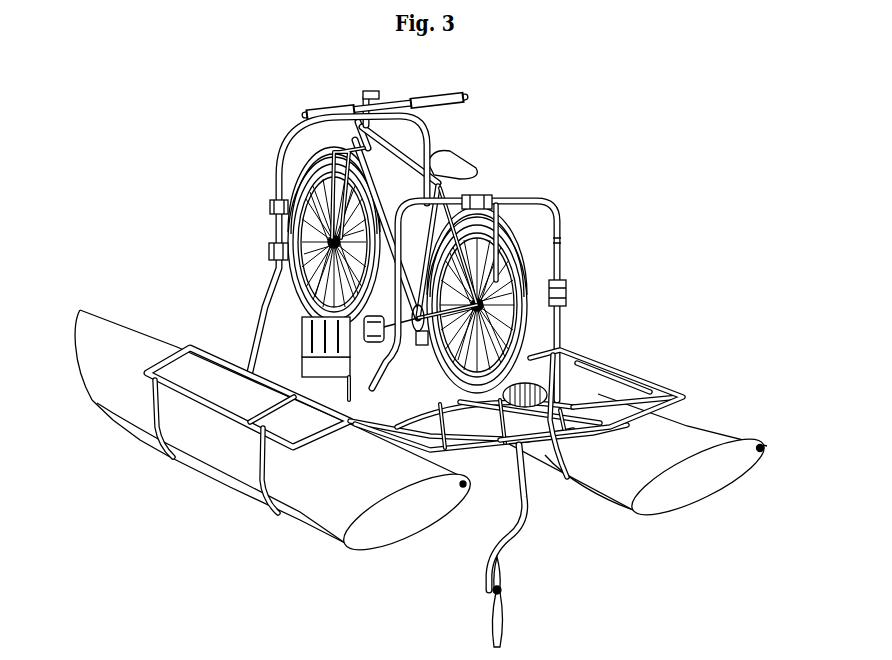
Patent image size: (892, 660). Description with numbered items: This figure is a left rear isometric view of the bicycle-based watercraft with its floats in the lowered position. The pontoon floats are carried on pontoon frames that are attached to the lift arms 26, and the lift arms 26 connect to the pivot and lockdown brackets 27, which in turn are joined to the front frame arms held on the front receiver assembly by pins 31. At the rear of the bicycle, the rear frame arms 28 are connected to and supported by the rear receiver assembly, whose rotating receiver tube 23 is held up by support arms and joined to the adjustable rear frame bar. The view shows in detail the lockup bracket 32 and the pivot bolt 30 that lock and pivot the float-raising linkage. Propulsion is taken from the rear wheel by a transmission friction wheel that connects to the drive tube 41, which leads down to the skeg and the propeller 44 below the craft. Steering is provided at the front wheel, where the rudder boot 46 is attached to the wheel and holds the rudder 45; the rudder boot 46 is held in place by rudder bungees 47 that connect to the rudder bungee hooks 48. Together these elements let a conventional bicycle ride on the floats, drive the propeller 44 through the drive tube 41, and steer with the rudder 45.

The rotating receiver tube 23 is at (483, 200).
The lift arms 26 is at (330, 393).
The pivot and lockdown brackets 27 is at (569, 292).
The rear frame arms 28 is at (553, 212).
The pivot bolt 30 is at (271, 248).
The pins 31 is at (306, 325).
The lockup bracket 32 is at (272, 203).
The drive tube 41 is at (527, 505).
The propeller 44 is at (505, 612).
The rudder 45 is at (330, 392).
The rudder boot 46 is at (309, 338).
The rudder bungees 47 is at (307, 350).
The rudder bungee hooks 48 is at (303, 352).